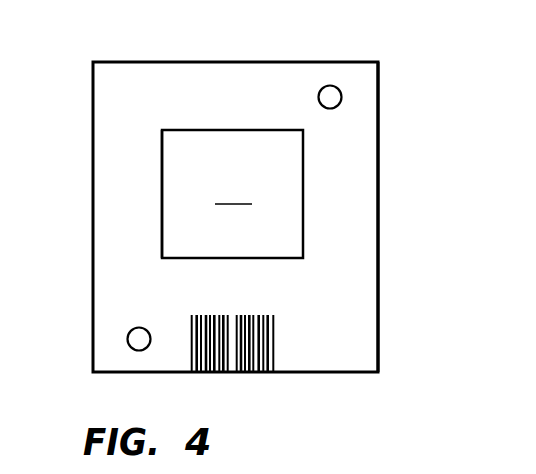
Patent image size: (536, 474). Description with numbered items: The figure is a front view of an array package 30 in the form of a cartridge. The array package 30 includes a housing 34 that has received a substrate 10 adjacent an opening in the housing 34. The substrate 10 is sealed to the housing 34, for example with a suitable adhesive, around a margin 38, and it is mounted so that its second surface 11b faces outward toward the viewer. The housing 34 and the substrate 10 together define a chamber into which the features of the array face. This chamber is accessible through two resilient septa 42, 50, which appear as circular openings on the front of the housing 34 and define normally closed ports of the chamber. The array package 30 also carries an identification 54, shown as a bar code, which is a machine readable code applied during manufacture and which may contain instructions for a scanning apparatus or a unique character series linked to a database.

The array package 30 is at (388, 290).
The housing 34 is at (363, 202).
The substrate 10 is at (287, 157).
The second surface 11b is at (238, 189).
The margin 38 is at (162, 173).
The resilient septum 50 is at (331, 85).
The resilient septum 42 is at (127, 339).
The identification 54 is at (278, 348).